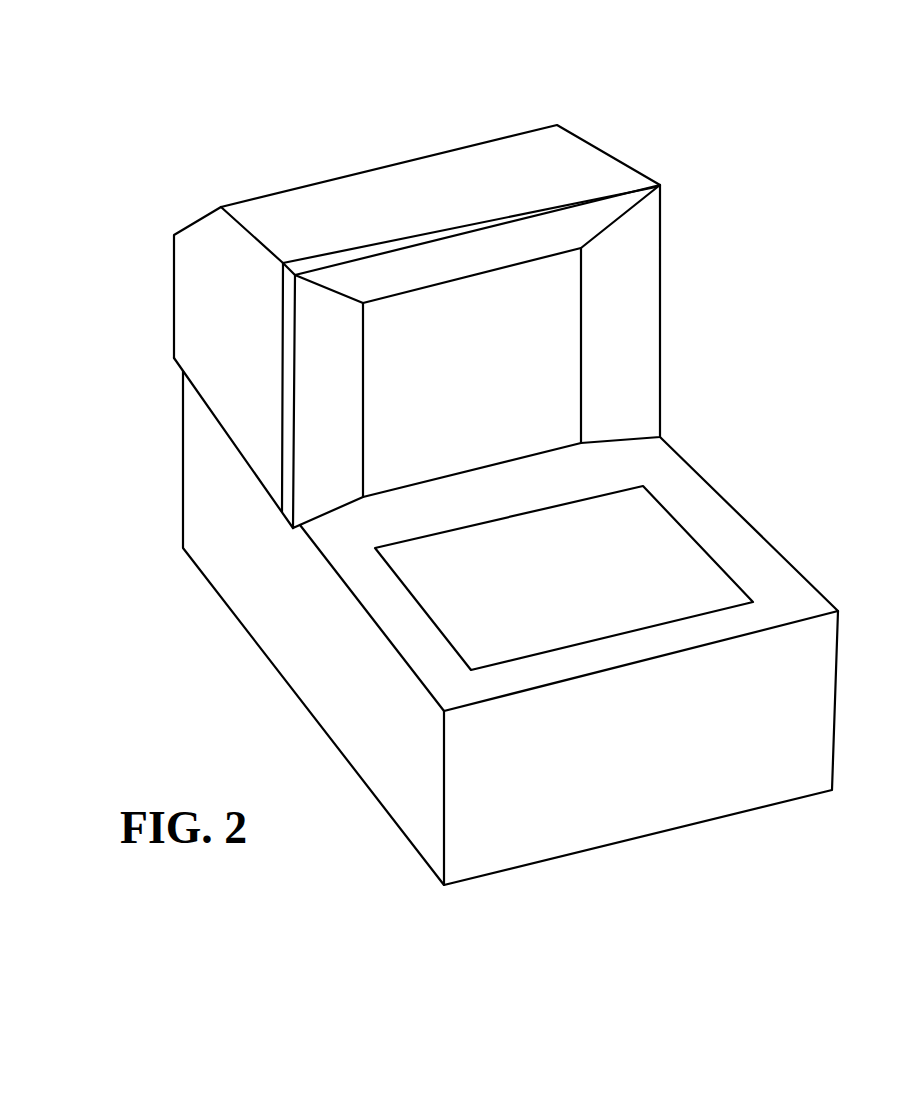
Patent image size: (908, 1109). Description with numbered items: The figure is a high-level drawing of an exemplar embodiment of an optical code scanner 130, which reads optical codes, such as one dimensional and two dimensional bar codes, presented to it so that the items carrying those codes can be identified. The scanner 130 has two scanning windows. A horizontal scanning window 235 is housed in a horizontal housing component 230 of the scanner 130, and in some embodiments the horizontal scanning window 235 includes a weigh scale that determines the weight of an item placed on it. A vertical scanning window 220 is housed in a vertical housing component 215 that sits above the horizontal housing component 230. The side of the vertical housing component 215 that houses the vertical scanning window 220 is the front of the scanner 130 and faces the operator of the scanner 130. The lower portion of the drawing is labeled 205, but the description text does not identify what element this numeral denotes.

The optical code scanner 130 is at (198, 81).
The base housing 205 is at (200, 497).
The vertical housing component 215 is at (575, 157).
The vertical scanning window 220 is at (530, 325).
The horizontal housing component 230 is at (707, 513).
The horizontal scanning window 235 is at (715, 580).